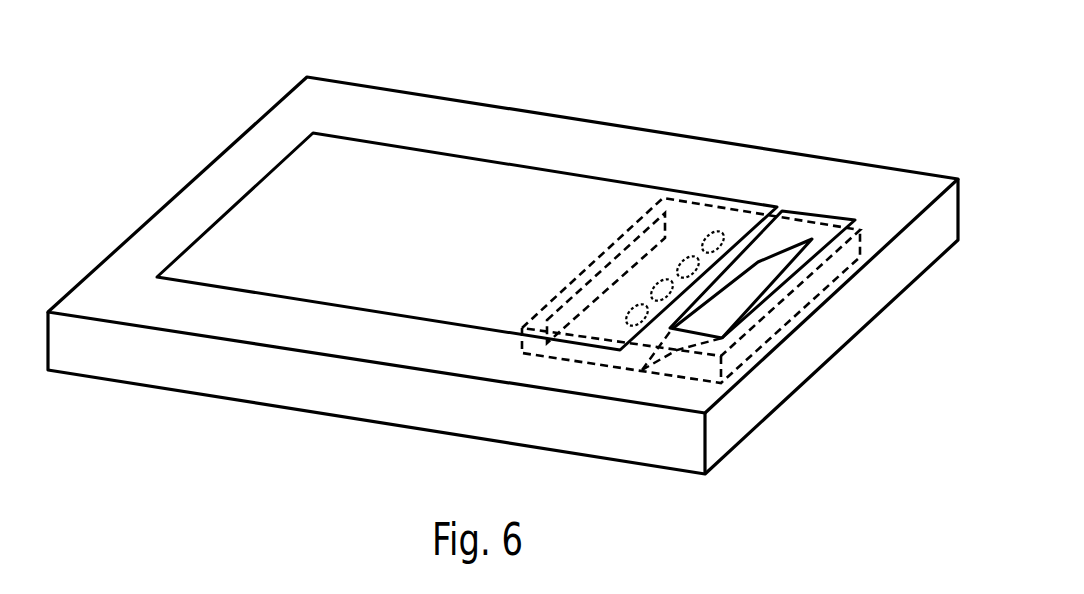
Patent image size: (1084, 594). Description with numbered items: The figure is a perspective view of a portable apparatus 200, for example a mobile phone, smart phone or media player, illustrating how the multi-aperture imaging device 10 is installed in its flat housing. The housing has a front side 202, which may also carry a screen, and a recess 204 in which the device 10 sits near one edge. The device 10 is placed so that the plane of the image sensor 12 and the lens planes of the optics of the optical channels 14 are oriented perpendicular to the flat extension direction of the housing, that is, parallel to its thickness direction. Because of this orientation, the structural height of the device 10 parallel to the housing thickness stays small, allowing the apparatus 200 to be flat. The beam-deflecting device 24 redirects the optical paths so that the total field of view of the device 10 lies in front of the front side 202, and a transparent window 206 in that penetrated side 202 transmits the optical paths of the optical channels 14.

The portable apparatus 200 is at (933, 32).
The front side 202 is at (143, 262).
The recess 204 is at (253, 187).
The transparent window 206 is at (846, 213).
The multi-aperture imaging device 10 is at (700, 204).
The image sensor 12 is at (600, 271).
The optical channels 14 is at (732, 228).
The beam-deflecting device 24 is at (795, 245).